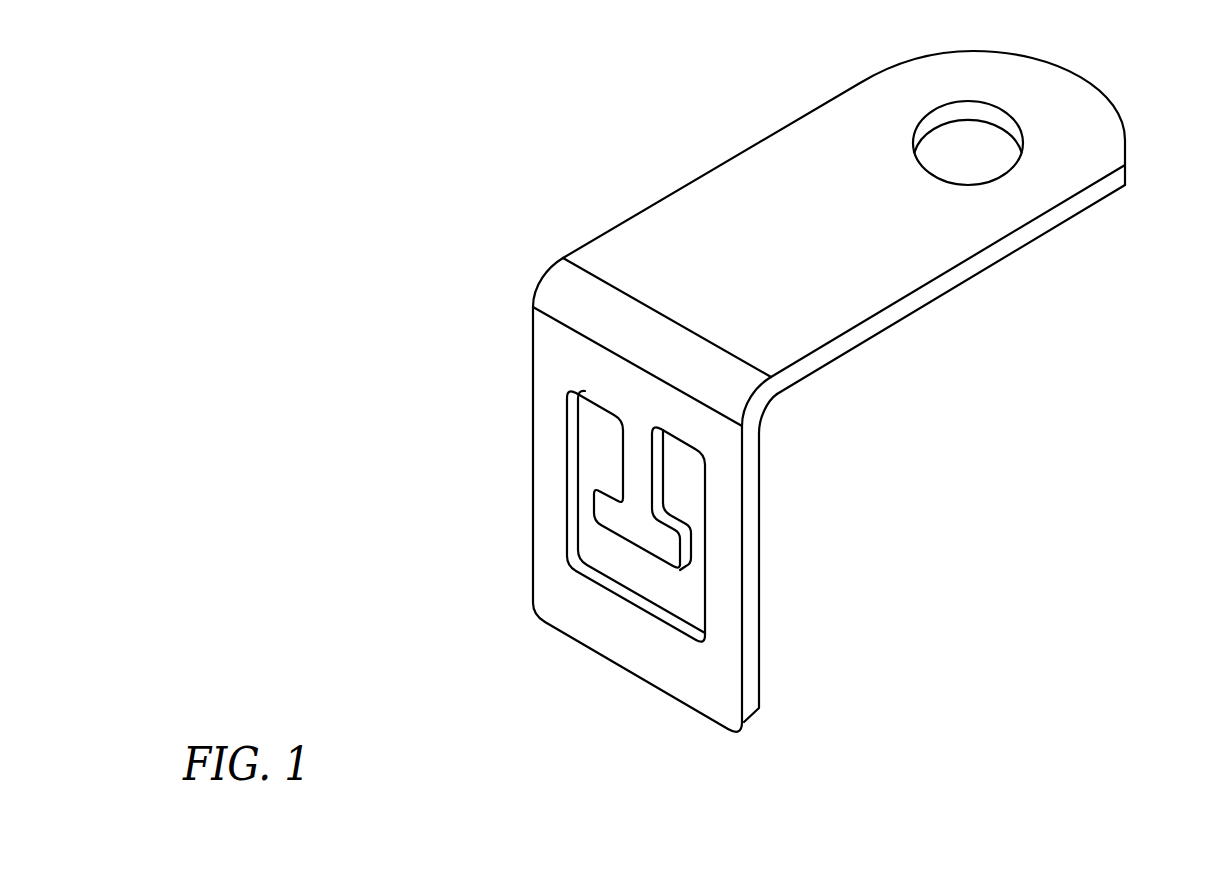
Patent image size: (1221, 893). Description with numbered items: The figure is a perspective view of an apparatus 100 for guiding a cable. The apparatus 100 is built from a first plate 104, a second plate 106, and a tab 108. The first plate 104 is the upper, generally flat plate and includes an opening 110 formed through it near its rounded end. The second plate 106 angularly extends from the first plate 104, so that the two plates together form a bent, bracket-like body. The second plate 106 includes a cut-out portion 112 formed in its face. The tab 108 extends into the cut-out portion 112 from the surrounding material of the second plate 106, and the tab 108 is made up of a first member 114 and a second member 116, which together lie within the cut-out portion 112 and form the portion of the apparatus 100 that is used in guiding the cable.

The apparatus 100 is at (808, 391).
The first plate 104 is at (868, 242).
The second plate 106 is at (728, 631).
The tab 108 is at (653, 559).
The opening 110 is at (968, 143).
The cut-out portion 112 is at (635, 581).
The first member 114 is at (720, 504).
The second member 116 is at (637, 524).